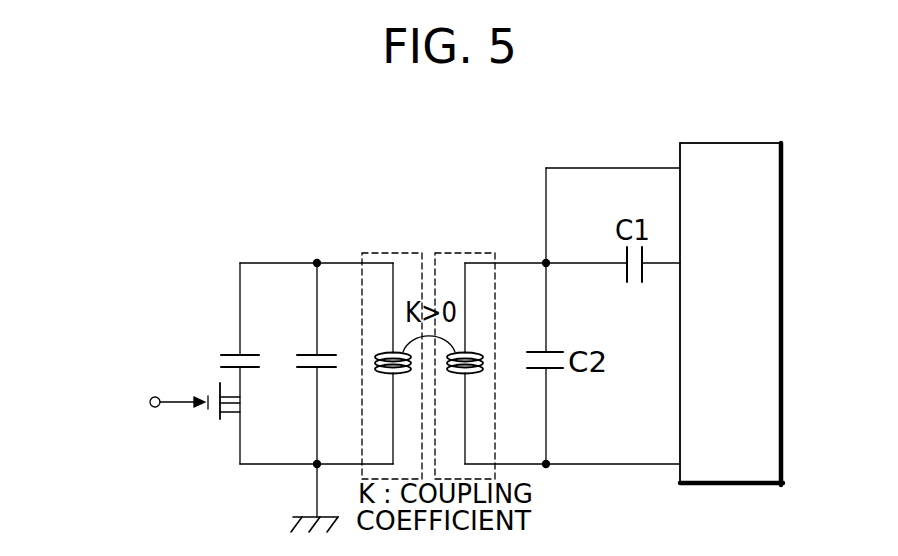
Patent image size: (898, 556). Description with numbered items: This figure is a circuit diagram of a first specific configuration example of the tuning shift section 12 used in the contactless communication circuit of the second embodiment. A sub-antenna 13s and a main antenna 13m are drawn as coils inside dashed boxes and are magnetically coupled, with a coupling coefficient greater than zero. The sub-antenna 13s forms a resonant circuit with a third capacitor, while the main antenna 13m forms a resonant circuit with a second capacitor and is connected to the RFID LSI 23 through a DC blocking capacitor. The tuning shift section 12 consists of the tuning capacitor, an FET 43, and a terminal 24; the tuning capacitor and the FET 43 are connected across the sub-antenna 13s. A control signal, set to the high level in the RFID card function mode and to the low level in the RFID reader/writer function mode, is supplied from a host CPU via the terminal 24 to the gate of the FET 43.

The tuning shift section 12 is at (155, 301).
The terminal 24 is at (151, 398).
The FET 43 is at (206, 408).
The sub-antenna 13s is at (393, 250).
The main antenna 13m is at (497, 232).
The RFID LSI 23 is at (783, 302).